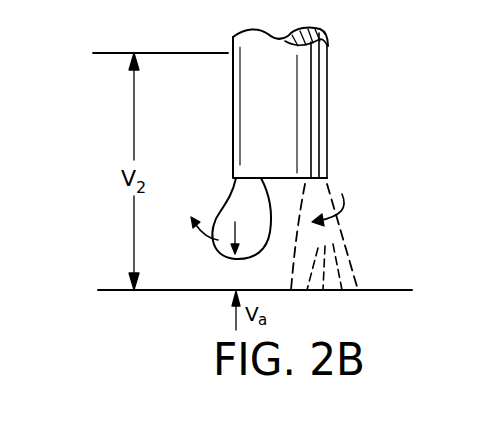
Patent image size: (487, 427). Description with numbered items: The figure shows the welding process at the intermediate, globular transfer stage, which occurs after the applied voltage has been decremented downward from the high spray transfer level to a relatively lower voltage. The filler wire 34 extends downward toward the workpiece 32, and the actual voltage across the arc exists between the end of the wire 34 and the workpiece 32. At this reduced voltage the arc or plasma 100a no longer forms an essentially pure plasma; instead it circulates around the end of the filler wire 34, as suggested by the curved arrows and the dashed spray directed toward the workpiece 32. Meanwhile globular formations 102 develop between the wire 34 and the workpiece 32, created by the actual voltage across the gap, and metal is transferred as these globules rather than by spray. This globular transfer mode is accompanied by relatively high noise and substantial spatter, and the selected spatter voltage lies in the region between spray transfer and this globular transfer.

The wire 34 is at (307, 133).
The globular formations 102 is at (235, 204).
The arc or plasma 100a is at (345, 245).
The workpiece 32 is at (382, 290).